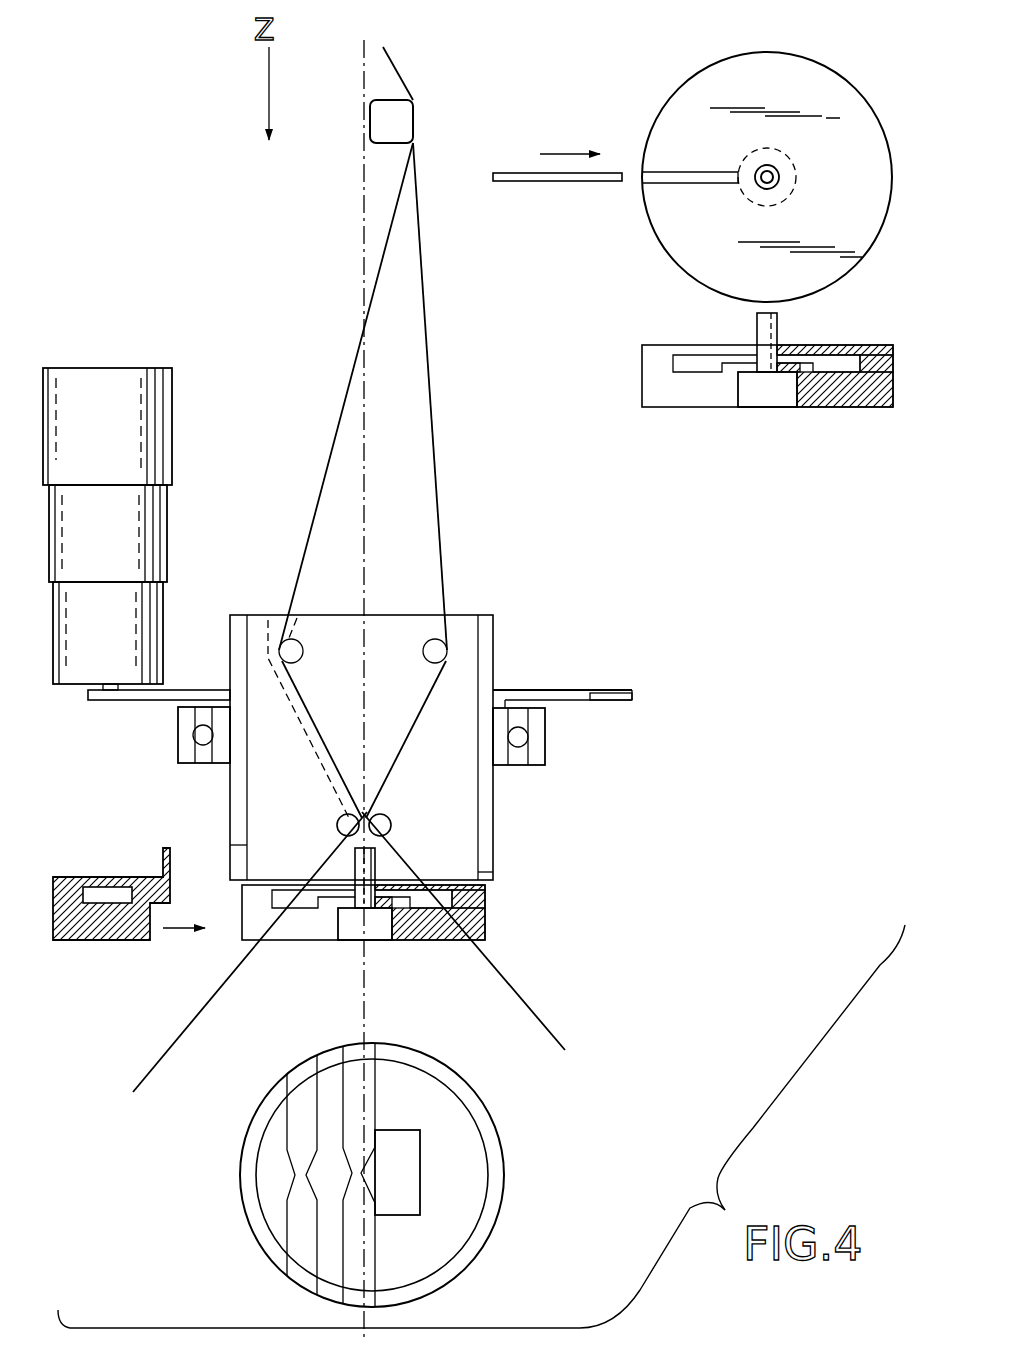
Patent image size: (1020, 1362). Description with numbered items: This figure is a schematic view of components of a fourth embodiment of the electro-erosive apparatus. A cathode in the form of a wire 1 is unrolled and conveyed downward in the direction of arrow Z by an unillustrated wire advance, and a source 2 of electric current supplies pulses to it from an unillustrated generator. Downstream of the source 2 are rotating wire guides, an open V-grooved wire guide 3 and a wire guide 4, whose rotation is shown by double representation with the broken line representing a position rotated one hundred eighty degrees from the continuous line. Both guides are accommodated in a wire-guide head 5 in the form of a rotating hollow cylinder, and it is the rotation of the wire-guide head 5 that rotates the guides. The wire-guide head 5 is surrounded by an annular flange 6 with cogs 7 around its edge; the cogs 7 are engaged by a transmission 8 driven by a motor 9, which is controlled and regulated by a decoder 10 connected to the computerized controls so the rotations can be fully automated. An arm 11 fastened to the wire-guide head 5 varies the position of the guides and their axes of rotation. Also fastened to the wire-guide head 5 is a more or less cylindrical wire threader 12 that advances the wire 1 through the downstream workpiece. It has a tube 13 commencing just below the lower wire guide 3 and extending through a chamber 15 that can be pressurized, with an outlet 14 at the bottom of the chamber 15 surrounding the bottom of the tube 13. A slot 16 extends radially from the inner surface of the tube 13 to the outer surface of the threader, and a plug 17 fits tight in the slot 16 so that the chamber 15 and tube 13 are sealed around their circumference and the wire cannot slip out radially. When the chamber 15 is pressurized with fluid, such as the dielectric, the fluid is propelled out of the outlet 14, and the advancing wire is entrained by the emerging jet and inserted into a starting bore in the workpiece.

The wire 1 is at (400, 75).
The source of electric current 2 is at (400, 123).
The open V-grooved wire guide 3 is at (338, 828).
The wire guide 4 is at (283, 645).
The wire-guide head 5 is at (485, 633).
The annular flange 6 is at (553, 695).
The cogs 7 is at (598, 700).
The transmission 8 is at (153, 630).
The motor 9 is at (160, 517).
The decoder 10 is at (165, 421).
The arm 11 is at (545, 762).
The wire threader 12 is at (672, 80).
The tube 13 is at (373, 862).
The outlet 14 is at (370, 912).
The chamber 15 is at (440, 897).
The slot 16 is at (313, 916).
The plug 17 is at (535, 182).